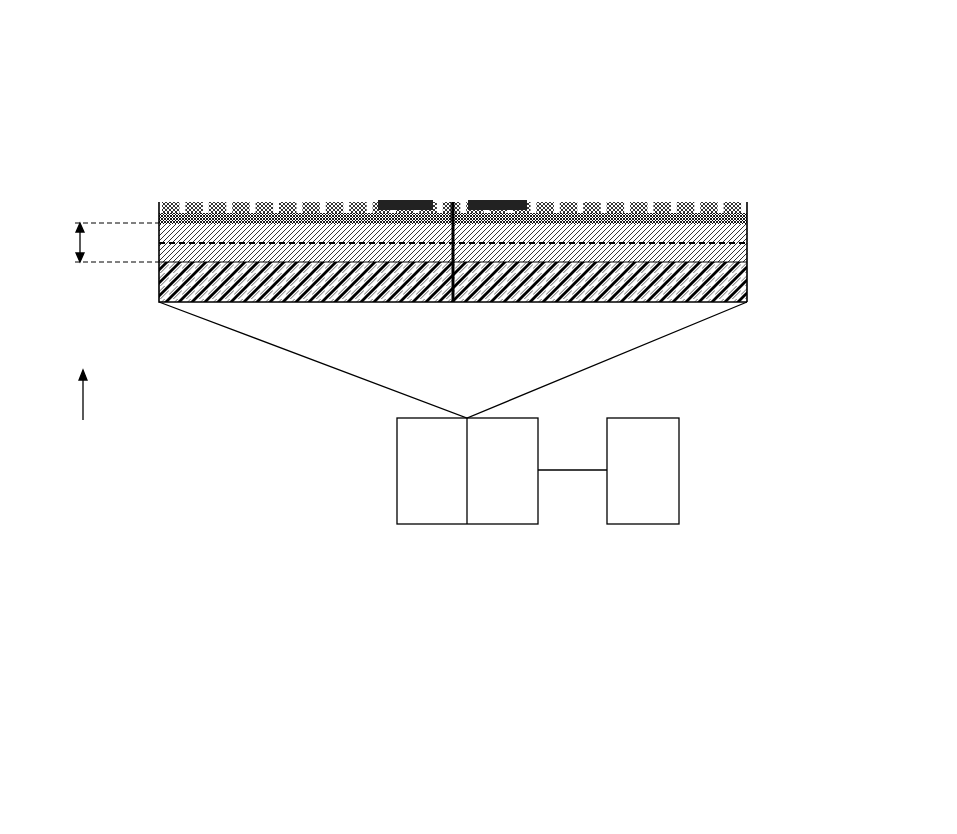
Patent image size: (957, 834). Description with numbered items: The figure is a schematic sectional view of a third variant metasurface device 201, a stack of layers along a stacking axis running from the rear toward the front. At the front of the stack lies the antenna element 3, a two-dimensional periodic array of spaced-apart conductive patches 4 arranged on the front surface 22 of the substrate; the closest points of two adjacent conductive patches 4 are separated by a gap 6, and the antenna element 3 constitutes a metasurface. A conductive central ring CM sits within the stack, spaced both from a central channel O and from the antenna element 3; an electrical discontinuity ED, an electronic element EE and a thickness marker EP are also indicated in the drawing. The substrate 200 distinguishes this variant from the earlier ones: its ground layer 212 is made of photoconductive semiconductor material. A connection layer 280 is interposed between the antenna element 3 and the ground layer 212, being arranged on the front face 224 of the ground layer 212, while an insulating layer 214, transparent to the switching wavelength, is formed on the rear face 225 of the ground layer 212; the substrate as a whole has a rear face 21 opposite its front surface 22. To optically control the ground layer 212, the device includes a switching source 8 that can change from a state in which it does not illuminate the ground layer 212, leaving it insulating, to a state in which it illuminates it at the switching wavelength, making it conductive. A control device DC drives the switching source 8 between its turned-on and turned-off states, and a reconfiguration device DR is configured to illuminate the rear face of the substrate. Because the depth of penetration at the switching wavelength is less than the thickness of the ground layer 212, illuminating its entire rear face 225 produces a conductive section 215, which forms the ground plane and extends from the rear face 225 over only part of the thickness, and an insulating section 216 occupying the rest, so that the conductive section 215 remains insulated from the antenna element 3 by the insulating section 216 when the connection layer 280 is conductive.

The metasurface device 201 is at (195, 89).
The antenna element 3 is at (153, 207).
The conductive patches 4 is at (193, 203).
The gap 6 is at (228, 200).
The front surface 22 is at (533, 203).
The front face 224 is at (691, 216).
The connection layer 280 is at (747, 212).
The ground layer 212 is at (747, 236).
The insulating layer 214 is at (747, 278).
The insulating section 216 is at (158, 230).
The conductive section 215 is at (158, 265).
The substrate 200 is at (106, 208).
The rear face 21 is at (211, 308).
The rear face 225 is at (692, 268).
The switching source 8 is at (493, 524).
The conductive central ring CM is at (407, 200).
The central channel O is at (451, 210).
The electrical discontinuity ED is at (453, 203).
The electronic element EE is at (824, 207).
The thickness EP is at (101, 242).
The reconfiguration device DR is at (422, 524).
The control device DC is at (679, 470).